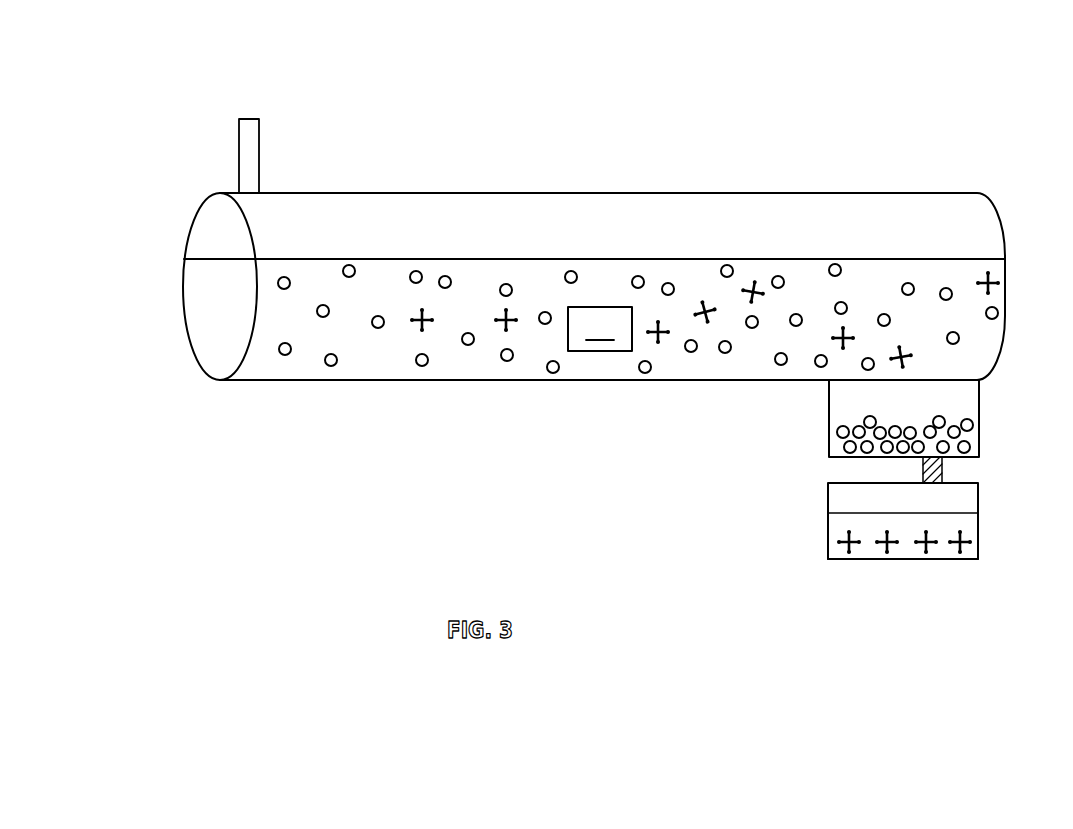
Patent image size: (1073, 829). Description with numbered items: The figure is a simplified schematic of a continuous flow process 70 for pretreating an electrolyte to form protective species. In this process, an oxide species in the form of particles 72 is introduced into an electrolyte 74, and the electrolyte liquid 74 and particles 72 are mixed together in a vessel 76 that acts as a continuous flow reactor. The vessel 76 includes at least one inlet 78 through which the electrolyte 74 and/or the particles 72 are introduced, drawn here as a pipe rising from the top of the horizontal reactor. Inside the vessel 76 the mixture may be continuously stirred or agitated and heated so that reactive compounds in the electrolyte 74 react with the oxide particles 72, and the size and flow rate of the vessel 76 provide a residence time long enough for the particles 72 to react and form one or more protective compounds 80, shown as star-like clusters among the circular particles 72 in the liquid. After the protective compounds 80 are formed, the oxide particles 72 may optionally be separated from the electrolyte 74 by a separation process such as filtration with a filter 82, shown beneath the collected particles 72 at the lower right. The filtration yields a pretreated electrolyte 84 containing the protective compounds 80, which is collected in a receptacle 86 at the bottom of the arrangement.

The continuous flow process 70 is at (124, 64).
The particles 72 is at (506, 284).
The electrolyte 74 is at (600, 329).
The vessel 76 is at (209, 196).
The inlet 78 is at (239, 119).
The protective compounds 80 is at (706, 305).
The filter 82 is at (945, 468).
The pretreated electrolyte 84 is at (965, 530).
The receptacle 86 is at (905, 560).